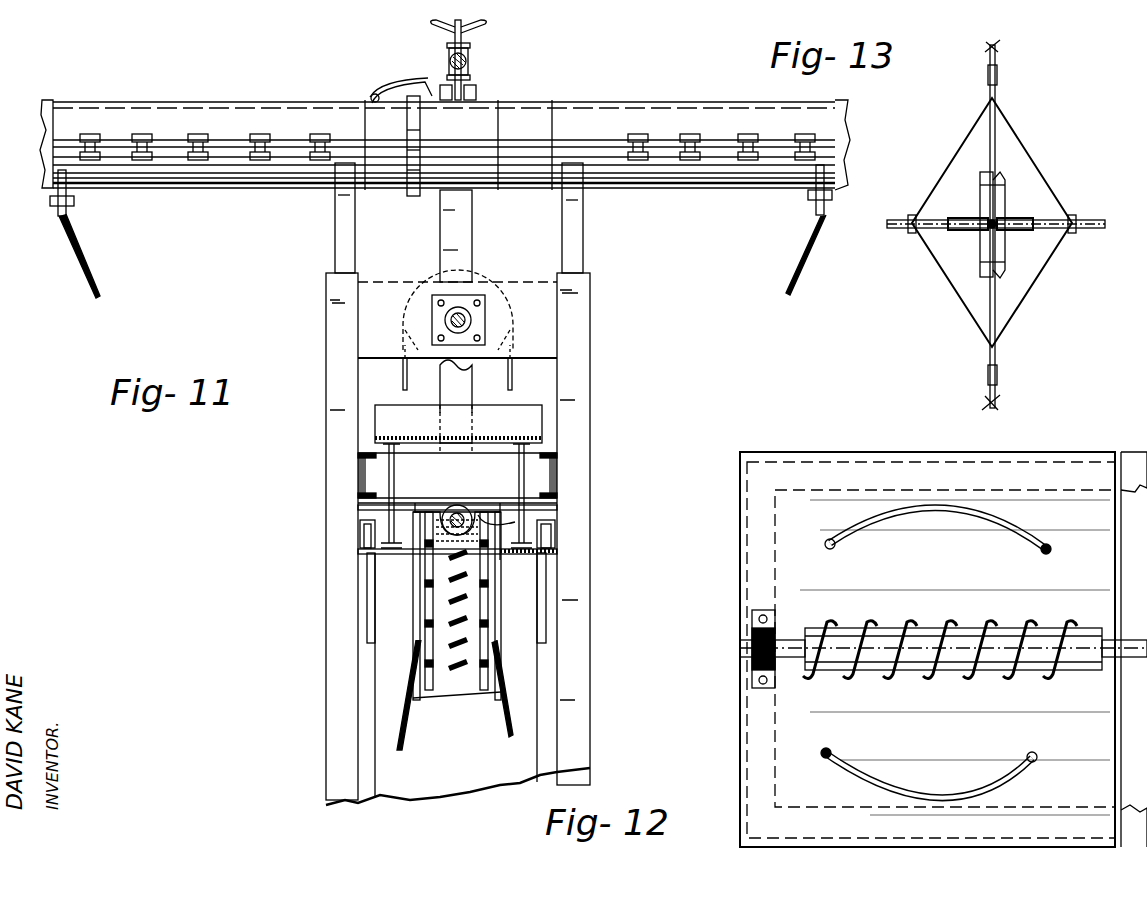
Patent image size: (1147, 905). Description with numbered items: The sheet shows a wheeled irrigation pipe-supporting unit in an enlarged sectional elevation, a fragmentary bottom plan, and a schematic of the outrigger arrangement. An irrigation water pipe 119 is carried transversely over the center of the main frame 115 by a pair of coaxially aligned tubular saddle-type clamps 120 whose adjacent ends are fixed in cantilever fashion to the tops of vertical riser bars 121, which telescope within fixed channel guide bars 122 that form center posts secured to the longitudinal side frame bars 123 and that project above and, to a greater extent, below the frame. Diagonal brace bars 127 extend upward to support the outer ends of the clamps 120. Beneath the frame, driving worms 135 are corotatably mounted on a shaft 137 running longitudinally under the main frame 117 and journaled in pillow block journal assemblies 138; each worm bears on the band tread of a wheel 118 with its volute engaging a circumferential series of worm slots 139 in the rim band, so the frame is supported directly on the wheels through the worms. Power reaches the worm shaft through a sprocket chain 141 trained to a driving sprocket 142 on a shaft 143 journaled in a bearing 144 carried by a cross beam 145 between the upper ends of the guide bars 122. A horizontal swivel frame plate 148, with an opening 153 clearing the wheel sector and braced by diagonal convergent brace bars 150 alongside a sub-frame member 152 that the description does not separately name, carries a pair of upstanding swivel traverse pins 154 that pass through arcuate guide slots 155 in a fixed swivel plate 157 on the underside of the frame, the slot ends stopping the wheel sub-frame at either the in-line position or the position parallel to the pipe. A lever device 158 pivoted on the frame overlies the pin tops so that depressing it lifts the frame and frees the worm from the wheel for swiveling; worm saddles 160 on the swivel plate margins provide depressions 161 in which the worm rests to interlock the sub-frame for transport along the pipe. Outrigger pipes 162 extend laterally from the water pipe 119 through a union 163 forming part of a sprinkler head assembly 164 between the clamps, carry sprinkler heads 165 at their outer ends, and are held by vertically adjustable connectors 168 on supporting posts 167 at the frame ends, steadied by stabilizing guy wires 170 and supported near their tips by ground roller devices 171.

In FIG. 13, the main frame 115 is at (1019, 202).
In FIG. 13, the main frame 117 is at (980, 195).
In FIG. 11, the wheels 118 is at (502, 594).
In FIG. 11, the irrigation water pipe 119 is at (530, 103).
In FIG. 13, the irrigation water pipe 119 is at (1098, 220).
In FIG. 11, the tubular saddle-type clamps 120 is at (170, 185).
In FIG. 13, the tubular saddle-type clamps 120 is at (1023, 219).
In FIG. 11, the vertical riser bars 121 is at (335, 226).
In FIG. 11, the vertical fixed channel guide bars 122 is at (335, 308).
In FIG. 11, the longitudinal side frame bars 123 is at (358, 495).
In FIG. 12, the longitudinal side frame bars 123 is at (1118, 480).
In FIG. 11, the diagonal brace bars 127 is at (82, 256).
In FIG. 11, the driving worms 135 is at (464, 507).
In FIG. 12, the driving worms 135 is at (887, 628).
In FIG. 12, the shaft 137 is at (1128, 640).
In FIG. 11, the pillow block journal assemblies 138 is at (515, 522).
In FIG. 12, the pillow block journal assemblies 138 is at (752, 664).
In FIG. 11, the worm slots 139 is at (470, 680).
In FIG. 11, the sprocket chain 141 is at (404, 390).
In FIG. 11, the driving sprocket 142 is at (432, 266).
In FIG. 11, the shaft 143 is at (468, 318).
In FIG. 11, the bearing 144 is at (445, 320).
In FIG. 11, the cross beam 145 is at (538, 284).
In FIG. 11, the swivel frame plate 148 is at (557, 553).
In FIG. 11, the diagonal convergent brace bars 150 is at (358, 596).
In FIG. 11, the guide strip 152 is at (370, 618).
In FIG. 11, the opening 153 is at (500, 556).
In FIG. 11, the swivel traverse pins 154 is at (528, 452).
In FIG. 12, the swivel traverse pins 154 is at (1050, 544).
In FIG. 12, the arcuate guide slots 155 is at (986, 510).
In FIG. 11, the fixed swivel plate 157 is at (360, 518).
In FIG. 12, the fixed swivel plate 157 is at (1090, 580).
In FIG. 11, the lever device 158 is at (528, 406).
In FIG. 11, the worm saddles 160 is at (556, 536).
In FIG. 13, the worm-receiving saddle depressions 161 is at (992, 184).
In FIG. 11, the outrigger pipes 162 is at (470, 58).
In FIG. 13, the outrigger pipes 162 is at (996, 62).
In FIG. 11, the union 163 is at (470, 72).
In FIG. 11, the sprinkler head assembly 164 is at (468, 38).
In FIG. 13, the sprinkler head assembly 164 is at (990, 218).
In FIG. 13, the sprinkler heads 165 is at (1000, 48).
In FIG. 11, the supporting posts 167 is at (472, 228).
In FIG. 13, the supporting posts 167 is at (985, 264).
In FIG. 11, the vertically adjustable connectors 168 is at (362, 540).
In FIG. 13, the stabilizing guy wires 170 is at (950, 158).
In FIG. 13, the supporting ground wheel or roller devices 171 is at (997, 84).